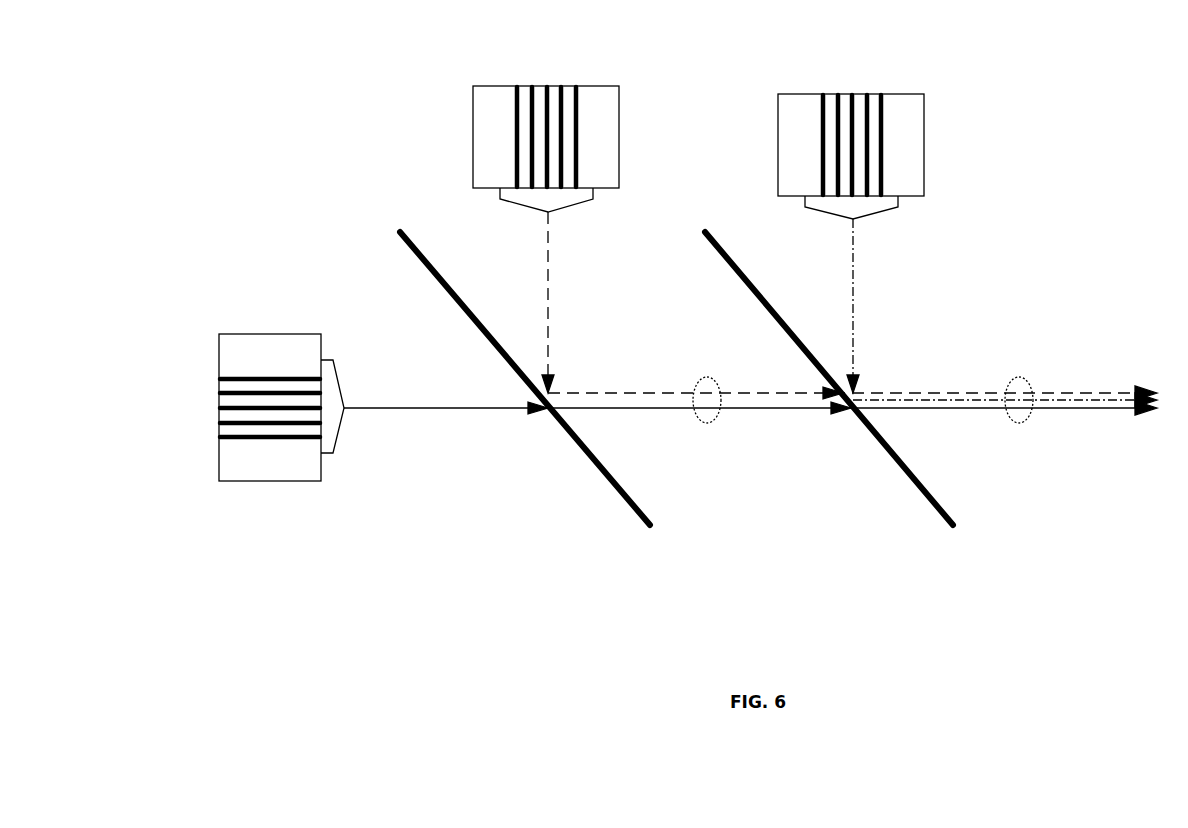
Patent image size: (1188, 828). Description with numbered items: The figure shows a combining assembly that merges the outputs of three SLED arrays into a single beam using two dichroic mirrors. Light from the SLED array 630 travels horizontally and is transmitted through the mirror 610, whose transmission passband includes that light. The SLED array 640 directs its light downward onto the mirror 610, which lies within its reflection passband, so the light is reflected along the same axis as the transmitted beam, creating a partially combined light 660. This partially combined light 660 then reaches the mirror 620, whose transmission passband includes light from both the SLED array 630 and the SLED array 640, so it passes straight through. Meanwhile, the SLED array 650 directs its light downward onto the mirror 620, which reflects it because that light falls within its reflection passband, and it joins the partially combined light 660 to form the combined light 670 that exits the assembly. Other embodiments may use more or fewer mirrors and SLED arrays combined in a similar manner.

The mirror 610 is at (600, 473).
The mirror 620 is at (943, 505).
The SLED array 630 is at (253, 334).
The SLED array 640 is at (619, 127).
The SLED array 650 is at (924, 140).
The partially combined light 660 is at (718, 415).
The combined light 670 is at (1032, 392).